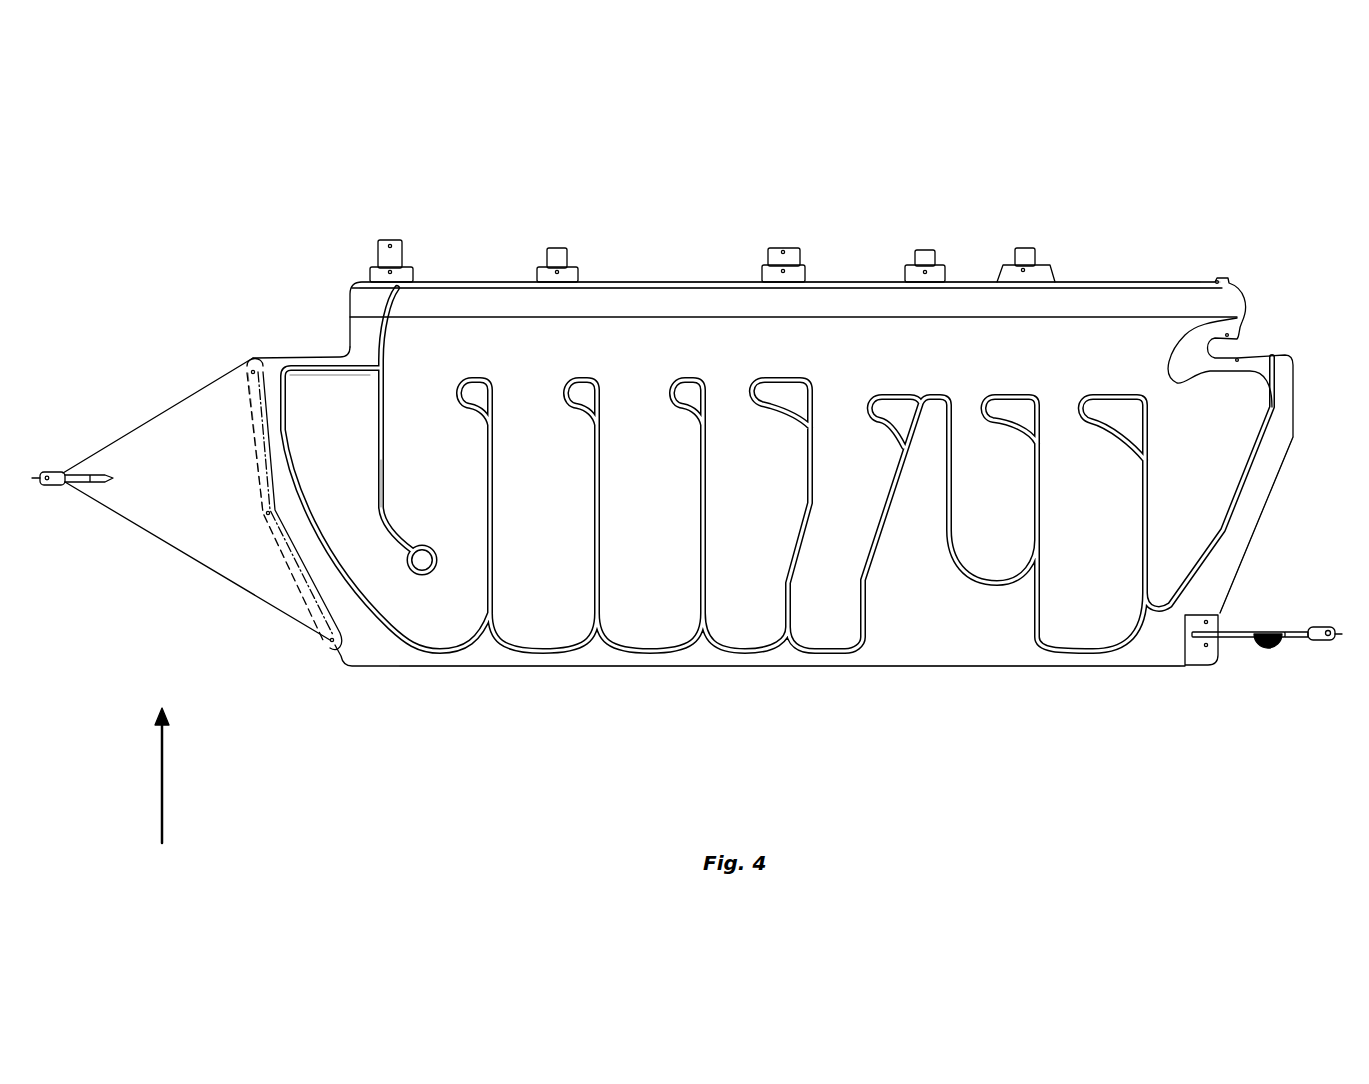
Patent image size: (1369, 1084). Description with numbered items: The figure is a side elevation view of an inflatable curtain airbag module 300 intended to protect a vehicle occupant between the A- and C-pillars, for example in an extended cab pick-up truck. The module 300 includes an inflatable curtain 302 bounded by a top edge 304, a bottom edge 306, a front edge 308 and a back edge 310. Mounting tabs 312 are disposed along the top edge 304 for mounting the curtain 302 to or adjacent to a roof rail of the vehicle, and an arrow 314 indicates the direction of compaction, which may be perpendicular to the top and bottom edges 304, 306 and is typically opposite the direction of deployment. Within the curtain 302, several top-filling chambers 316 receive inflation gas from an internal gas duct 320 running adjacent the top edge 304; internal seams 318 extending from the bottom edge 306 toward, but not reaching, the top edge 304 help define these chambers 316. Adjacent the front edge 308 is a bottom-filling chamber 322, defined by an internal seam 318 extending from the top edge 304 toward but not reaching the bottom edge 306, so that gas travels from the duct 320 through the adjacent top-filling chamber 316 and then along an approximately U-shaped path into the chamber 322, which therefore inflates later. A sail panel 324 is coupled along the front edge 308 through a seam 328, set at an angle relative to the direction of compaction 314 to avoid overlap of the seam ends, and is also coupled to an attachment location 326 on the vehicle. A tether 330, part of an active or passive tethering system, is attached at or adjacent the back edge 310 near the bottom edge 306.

The inflatable curtain airbag module 300 is at (1174, 223).
The inflatable curtain 302 is at (345, 672).
The top edge 304 is at (660, 280).
The bottom edge 306 is at (947, 672).
The front edge 308 is at (277, 557).
The back edge 310 is at (1242, 565).
The mounting tabs 312 is at (547, 255).
The direction of compaction 314 is at (162, 780).
The top-filling chambers 316 is at (723, 397).
The internal seams 318 is at (387, 503).
The internal gas duct 320 is at (1175, 302).
The bottom-filling chamber 322 is at (313, 393).
The sail panel 324 is at (190, 522).
The attachment location 326 is at (45, 487).
The seam 328 is at (260, 430).
The tether 330 is at (1287, 645).